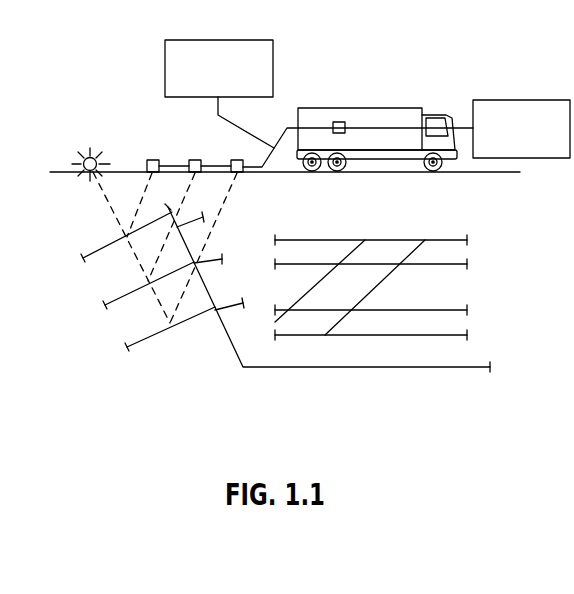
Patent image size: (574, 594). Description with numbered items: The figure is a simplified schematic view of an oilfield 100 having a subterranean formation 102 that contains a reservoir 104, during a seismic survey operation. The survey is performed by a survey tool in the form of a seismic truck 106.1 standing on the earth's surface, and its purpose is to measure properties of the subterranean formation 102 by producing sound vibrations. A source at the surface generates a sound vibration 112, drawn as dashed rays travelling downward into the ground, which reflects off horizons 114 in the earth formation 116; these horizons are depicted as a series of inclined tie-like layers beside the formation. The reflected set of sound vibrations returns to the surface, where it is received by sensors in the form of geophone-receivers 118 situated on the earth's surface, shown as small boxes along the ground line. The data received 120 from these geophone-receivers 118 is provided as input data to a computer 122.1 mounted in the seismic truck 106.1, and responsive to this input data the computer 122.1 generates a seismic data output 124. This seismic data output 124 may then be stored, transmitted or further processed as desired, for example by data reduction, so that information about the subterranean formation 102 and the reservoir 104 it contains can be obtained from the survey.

The oilfield 100 is at (83, 161).
The subterranean formation 102 is at (454, 223).
The reservoir 104 is at (445, 300).
The seismic truck 106.1 is at (413, 108).
The sound vibration 112 is at (145, 192).
The horizons 114 is at (101, 250).
The earth formation 116 is at (228, 342).
The geophone-receivers 118 is at (152, 160).
The data received 120 is at (220, 40).
The computer 122.1 is at (334, 122).
The seismic data output 124 is at (540, 100).